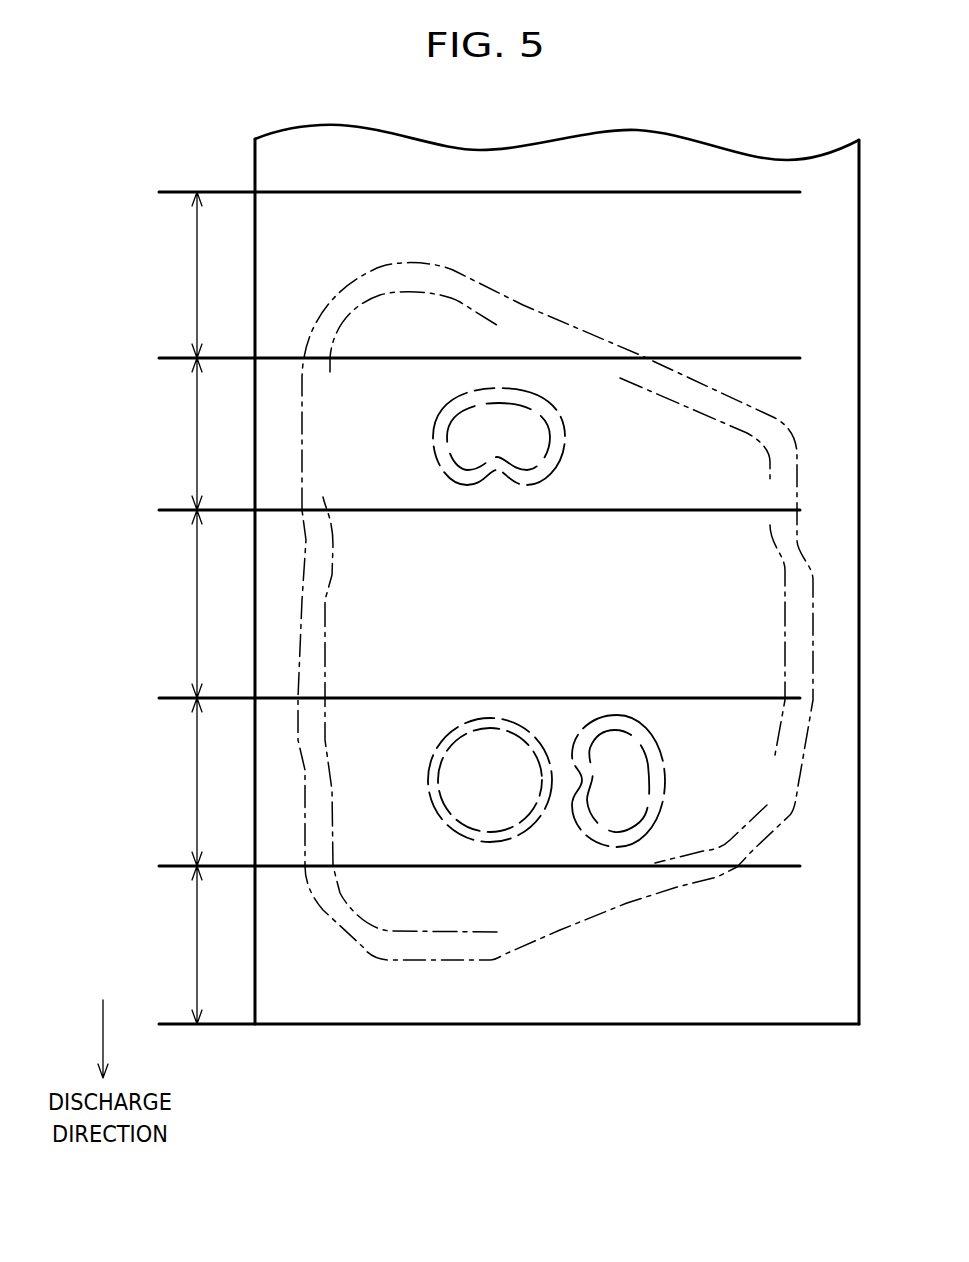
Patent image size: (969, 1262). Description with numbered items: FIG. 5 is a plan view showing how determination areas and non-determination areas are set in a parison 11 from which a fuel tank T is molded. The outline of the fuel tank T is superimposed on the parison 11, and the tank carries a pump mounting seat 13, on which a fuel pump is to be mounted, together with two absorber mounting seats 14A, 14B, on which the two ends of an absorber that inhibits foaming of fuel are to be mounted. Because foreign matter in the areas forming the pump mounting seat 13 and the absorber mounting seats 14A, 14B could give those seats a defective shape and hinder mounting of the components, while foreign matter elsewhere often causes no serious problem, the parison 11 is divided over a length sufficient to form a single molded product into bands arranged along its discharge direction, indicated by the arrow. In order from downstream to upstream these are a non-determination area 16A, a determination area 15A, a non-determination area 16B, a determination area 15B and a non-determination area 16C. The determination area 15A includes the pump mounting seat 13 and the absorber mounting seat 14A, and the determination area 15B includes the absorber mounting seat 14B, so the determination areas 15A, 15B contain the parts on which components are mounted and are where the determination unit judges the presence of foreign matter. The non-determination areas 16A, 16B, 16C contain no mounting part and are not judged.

The parison 11 is at (255, 167).
The pump mounting seat 13 is at (433, 755).
The absorber mounting seat 14A is at (665, 775).
The absorber mounting seat 14B is at (565, 445).
The determination area 15A is at (169, 782).
The determination area 15B is at (169, 434).
The non-determination area 16A is at (169, 945).
The non-determination area 16B is at (169, 604).
The non-determination area 16C is at (169, 275).
The fuel tank T is at (553, 318).